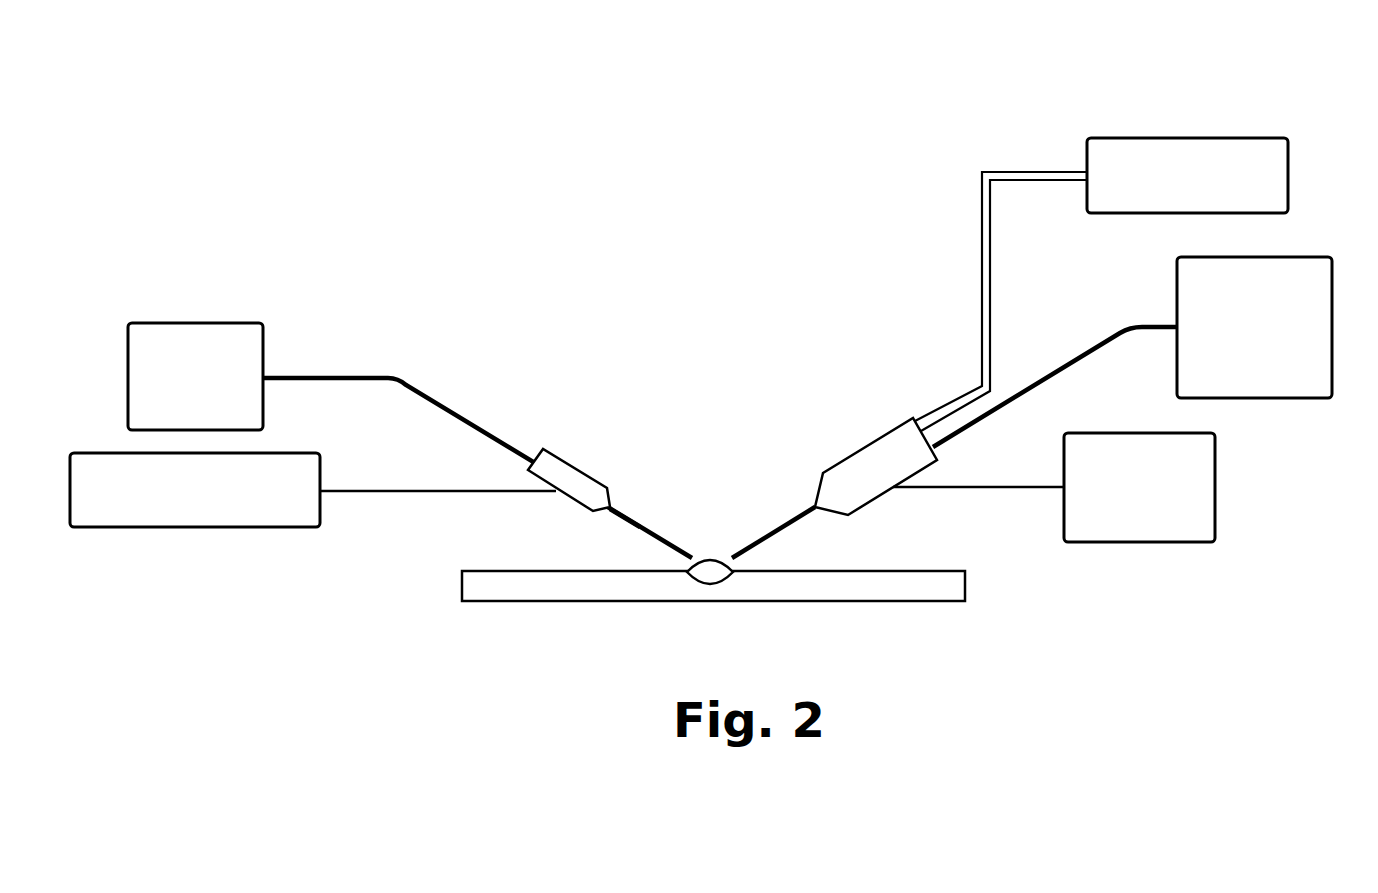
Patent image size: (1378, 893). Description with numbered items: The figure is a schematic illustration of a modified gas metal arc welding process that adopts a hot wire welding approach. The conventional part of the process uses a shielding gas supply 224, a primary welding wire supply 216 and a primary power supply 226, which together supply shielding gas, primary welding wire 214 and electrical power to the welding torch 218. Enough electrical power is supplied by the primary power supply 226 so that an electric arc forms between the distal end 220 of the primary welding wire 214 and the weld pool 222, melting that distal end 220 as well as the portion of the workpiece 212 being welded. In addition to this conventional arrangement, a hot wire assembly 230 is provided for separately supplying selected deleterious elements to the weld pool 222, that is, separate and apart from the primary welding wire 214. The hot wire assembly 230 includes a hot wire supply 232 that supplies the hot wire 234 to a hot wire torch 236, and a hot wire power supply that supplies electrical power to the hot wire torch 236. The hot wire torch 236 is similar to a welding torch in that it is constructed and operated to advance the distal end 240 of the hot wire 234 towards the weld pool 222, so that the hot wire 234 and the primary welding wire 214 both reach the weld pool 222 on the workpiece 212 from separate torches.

The workpiece 212 is at (850, 587).
The primary welding wire 214 is at (1047, 373).
The primary welding wire supply 216 is at (1177, 303).
The welding torch 218 is at (857, 477).
The distal end of primary welding wire 220 is at (770, 533).
The weld pool 222 is at (717, 576).
The shielding gas supply 224 is at (1187, 137).
The primary power supply 226 is at (1137, 543).
The hot wire assembly 230 is at (328, 242).
The hot wire supply 232 is at (193, 323).
The hot wire 234 is at (438, 398).
The hot wire torch 236 is at (572, 465).
The distal end of hot wire 240 is at (638, 528).